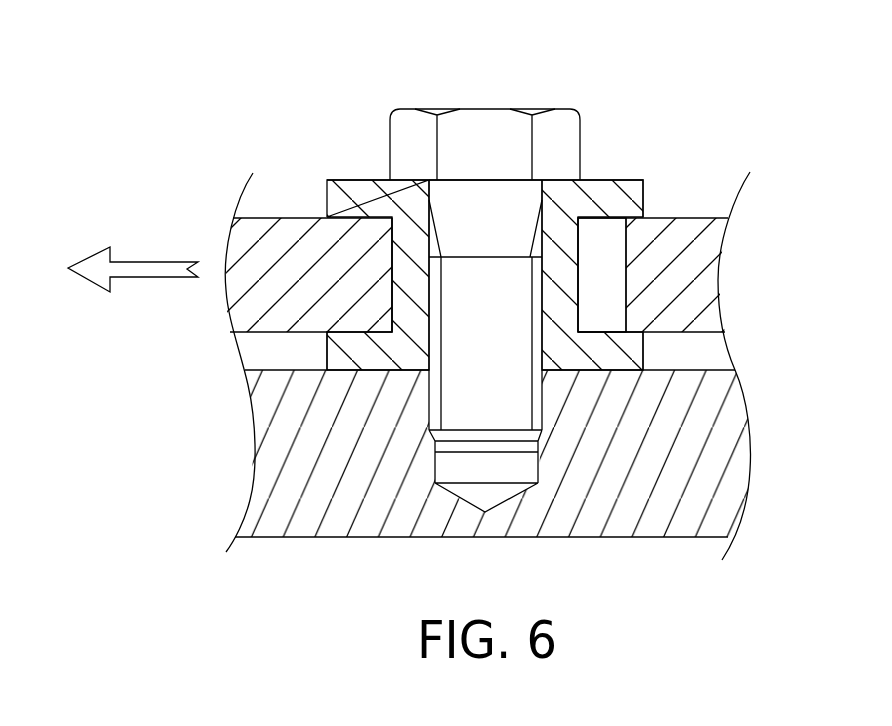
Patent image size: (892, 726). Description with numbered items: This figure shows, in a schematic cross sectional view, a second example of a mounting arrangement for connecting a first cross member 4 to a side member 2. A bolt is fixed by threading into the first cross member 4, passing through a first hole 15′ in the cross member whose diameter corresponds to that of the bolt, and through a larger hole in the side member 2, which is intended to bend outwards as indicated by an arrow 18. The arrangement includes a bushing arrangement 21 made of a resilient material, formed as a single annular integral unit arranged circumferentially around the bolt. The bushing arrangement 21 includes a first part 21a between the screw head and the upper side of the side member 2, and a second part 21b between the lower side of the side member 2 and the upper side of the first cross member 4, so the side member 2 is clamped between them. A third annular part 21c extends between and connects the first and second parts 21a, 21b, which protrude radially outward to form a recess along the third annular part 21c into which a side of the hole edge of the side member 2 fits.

The side member 2 is at (270, 253).
The first cross member 4 is at (640, 435).
The first hole 15′ is at (542, 395).
The arrow 18 is at (137, 262).
The bushing arrangement 21 is at (614, 173).
The first part 21a is at (367, 197).
The second part 21b is at (375, 353).
The third annular part 21c is at (403, 270).